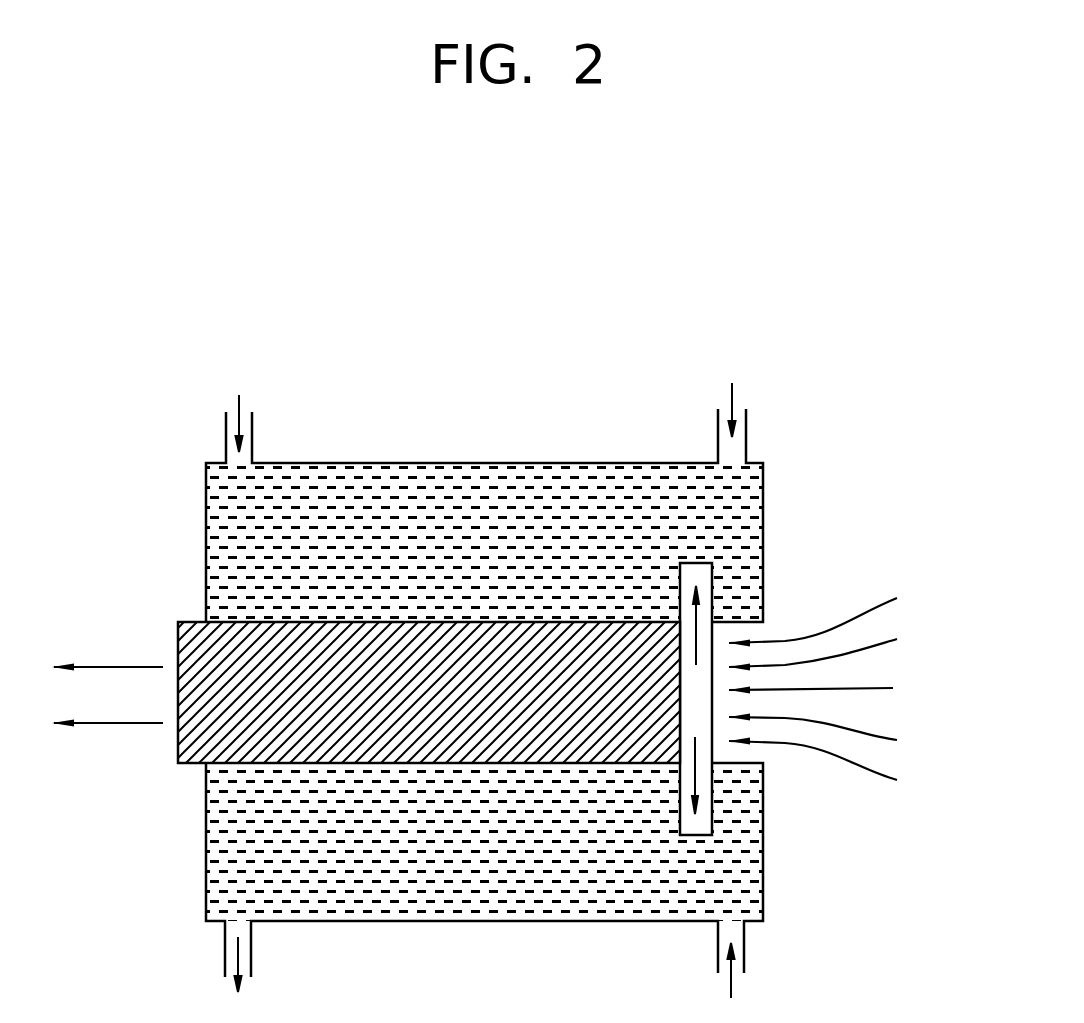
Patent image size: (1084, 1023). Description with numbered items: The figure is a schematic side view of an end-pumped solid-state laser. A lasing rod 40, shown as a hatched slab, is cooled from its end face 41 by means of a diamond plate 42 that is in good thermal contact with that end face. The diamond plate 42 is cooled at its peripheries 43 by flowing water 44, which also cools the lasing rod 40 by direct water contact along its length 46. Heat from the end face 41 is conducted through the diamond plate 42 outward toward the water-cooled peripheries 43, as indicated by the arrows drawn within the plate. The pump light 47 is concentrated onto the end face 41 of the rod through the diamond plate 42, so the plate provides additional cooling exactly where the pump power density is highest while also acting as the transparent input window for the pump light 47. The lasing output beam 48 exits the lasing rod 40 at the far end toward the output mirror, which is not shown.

The lasing rod 40 is at (480, 723).
The end face 41 is at (679, 672).
The diamond plate 42 is at (696, 720).
The peripheries 43 is at (713, 583).
The flowing water 44 is at (547, 899).
The length 46 is at (446, 625).
The pump light 47 is at (837, 689).
The lasing output beam 48 is at (100, 695).